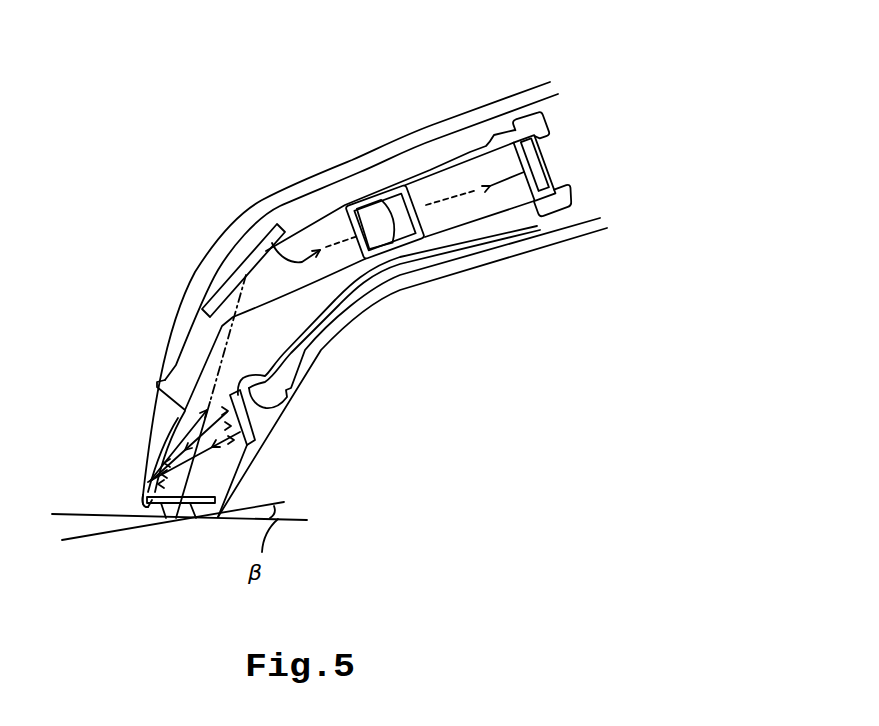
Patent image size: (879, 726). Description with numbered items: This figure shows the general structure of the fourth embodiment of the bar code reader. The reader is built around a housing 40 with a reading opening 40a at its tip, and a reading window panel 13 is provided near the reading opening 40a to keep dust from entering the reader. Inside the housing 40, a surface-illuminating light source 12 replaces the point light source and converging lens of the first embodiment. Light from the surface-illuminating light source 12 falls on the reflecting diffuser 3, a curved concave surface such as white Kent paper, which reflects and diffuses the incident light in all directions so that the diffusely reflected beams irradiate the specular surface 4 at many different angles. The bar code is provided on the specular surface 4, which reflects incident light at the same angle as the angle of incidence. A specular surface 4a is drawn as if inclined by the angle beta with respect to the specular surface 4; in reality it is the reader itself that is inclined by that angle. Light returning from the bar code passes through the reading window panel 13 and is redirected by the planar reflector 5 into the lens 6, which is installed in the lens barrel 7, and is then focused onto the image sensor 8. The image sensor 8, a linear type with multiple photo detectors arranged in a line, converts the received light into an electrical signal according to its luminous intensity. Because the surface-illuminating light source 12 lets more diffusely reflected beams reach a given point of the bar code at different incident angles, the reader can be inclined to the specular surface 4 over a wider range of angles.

The reflecting diffuser 3 is at (172, 413).
The specular surface 4 is at (300, 520).
The specular surface 4a is at (285, 502).
The planar reflector 5 is at (273, 225).
The lens 6 is at (383, 208).
The lens barrel 7 is at (416, 208).
The image sensor 8 is at (512, 137).
The surface-illuminating light source 12 is at (255, 427).
The reading window panel 13 is at (192, 517).
The housing 40 is at (187, 295).
The reading opening 40a is at (137, 502).